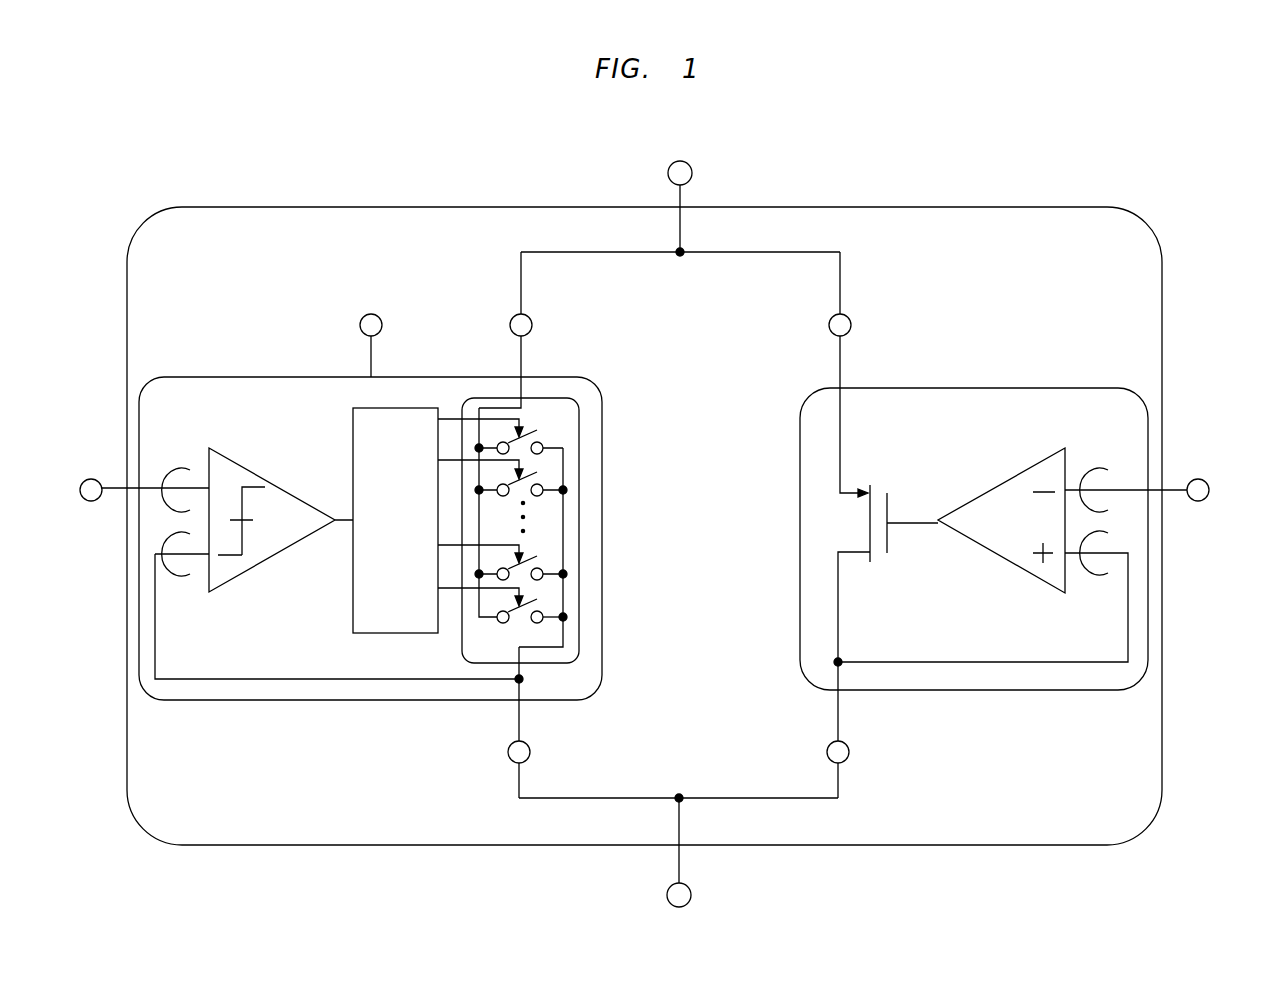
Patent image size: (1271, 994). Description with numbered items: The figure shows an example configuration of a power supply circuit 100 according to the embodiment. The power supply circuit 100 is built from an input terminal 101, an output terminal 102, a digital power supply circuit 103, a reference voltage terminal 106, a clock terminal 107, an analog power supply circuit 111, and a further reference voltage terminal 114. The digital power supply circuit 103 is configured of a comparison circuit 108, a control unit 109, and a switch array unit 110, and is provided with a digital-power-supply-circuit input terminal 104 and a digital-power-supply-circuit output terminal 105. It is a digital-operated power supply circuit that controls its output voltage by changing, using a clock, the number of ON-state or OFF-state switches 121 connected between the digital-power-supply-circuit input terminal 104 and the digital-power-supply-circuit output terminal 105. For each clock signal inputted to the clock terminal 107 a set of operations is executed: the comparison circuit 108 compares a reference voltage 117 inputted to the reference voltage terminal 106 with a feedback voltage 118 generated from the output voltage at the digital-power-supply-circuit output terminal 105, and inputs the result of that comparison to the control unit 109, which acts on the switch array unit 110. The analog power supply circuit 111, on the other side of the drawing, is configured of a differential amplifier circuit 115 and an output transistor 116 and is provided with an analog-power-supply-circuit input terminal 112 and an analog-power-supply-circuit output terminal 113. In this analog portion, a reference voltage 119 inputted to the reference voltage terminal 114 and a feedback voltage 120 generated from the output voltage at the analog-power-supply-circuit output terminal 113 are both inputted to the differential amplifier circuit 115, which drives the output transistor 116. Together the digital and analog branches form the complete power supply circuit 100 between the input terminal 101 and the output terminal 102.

The power supply circuit 100 is at (1028, 207).
The input terminal 101 is at (692, 171).
The output terminal 102 is at (692, 890).
The digital power supply circuit 103 is at (213, 377).
The digital-power-supply-circuit input terminal 104 is at (532, 322).
The digital-power-supply-circuit output terminal 105 is at (532, 750).
The reference voltage terminal 106 is at (91, 479).
The clock terminal 107 is at (371, 314).
The comparison circuit 108 is at (292, 490).
The control unit 109 is at (353, 603).
The switch array unit 110 is at (573, 530).
The analog power supply circuit 111 is at (1075, 388).
The analog-power-supply-circuit input terminal 112 is at (852, 322).
The analog-power-supply-circuit output terminal 113 is at (851, 750).
The reference voltage terminal 114 is at (1198, 479).
The differential amplifier circuit 115 is at (975, 498).
The output transistor 116 is at (867, 513).
The reference voltage 117 is at (185, 468).
The feedback voltage 118 is at (190, 576).
The reference voltage 119 is at (1097, 467).
The feedback voltage 120 is at (1097, 580).
The switches 121 is at (543, 437).